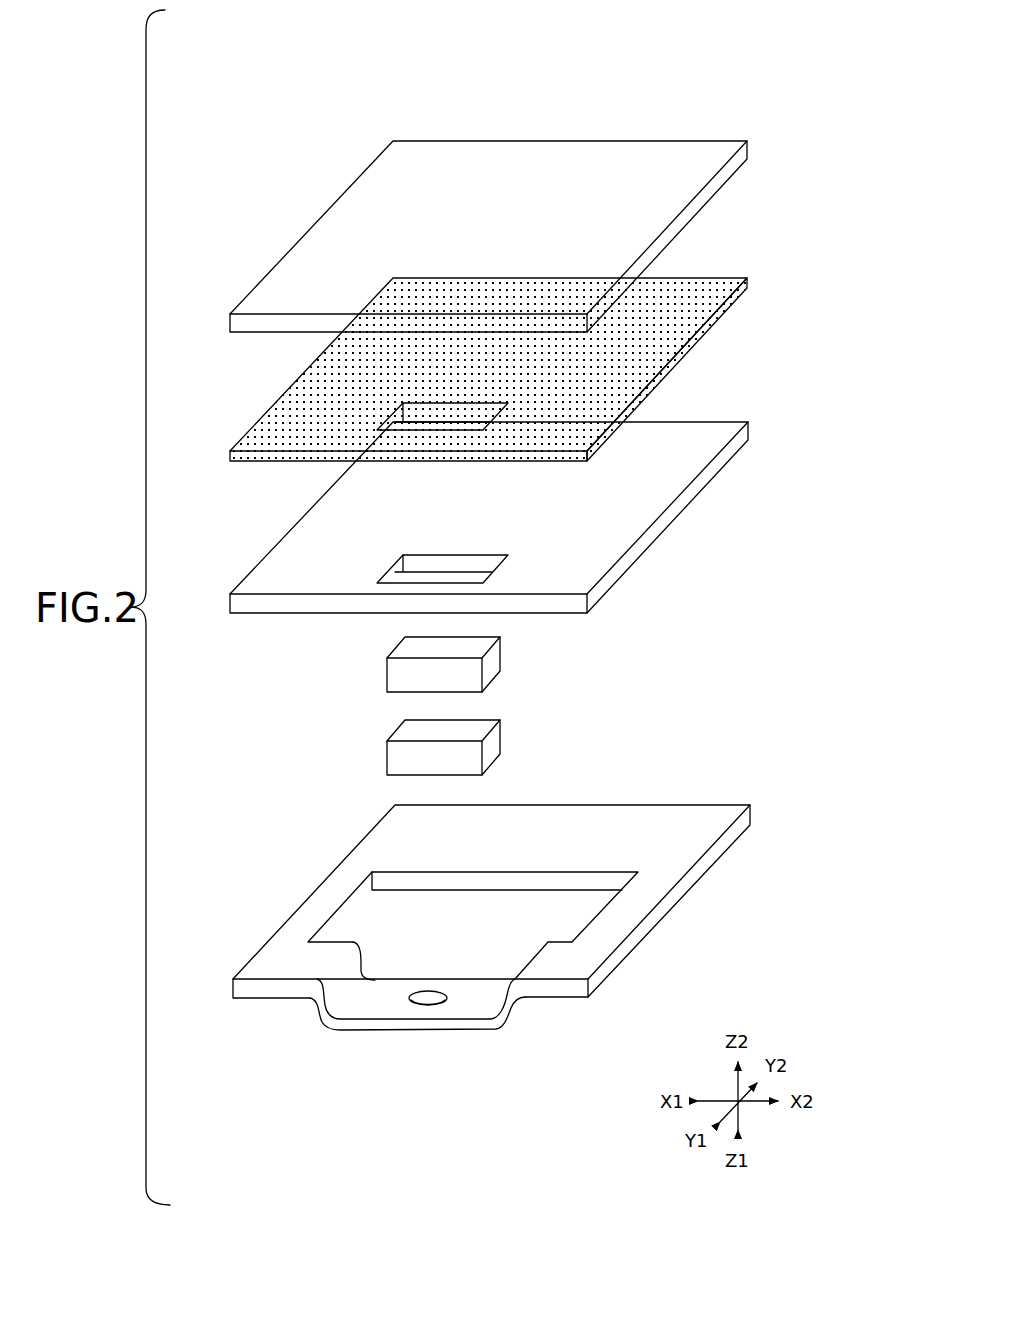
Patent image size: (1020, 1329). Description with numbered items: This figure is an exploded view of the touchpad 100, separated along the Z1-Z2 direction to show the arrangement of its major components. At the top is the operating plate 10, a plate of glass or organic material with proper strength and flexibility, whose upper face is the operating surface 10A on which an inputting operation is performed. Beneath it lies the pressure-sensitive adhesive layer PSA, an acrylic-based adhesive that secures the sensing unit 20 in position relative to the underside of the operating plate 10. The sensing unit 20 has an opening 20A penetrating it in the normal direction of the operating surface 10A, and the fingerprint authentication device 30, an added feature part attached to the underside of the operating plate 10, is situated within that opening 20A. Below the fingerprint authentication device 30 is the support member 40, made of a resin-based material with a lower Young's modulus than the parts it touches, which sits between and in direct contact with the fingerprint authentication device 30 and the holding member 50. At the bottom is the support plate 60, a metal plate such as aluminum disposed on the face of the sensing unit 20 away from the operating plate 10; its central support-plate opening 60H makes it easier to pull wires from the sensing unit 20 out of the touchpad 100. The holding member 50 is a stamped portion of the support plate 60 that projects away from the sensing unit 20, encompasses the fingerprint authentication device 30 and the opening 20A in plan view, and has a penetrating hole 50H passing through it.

The touchpad 100 is at (229, 106).
The operating plate 10 is at (677, 160).
The operating surface 10A is at (480, 196).
The pressure-sensitive adhesive layer PSA is at (677, 292).
The sensing unit 20 is at (723, 463).
The opening 20A is at (425, 563).
The fingerprint authentication device 30 is at (392, 672).
The support member 40 is at (392, 755).
The support plate 60 is at (697, 815).
The support-plate opening 60H is at (372, 907).
The holding member 50 is at (483, 1023).
The penetrating hole 50H is at (433, 992).